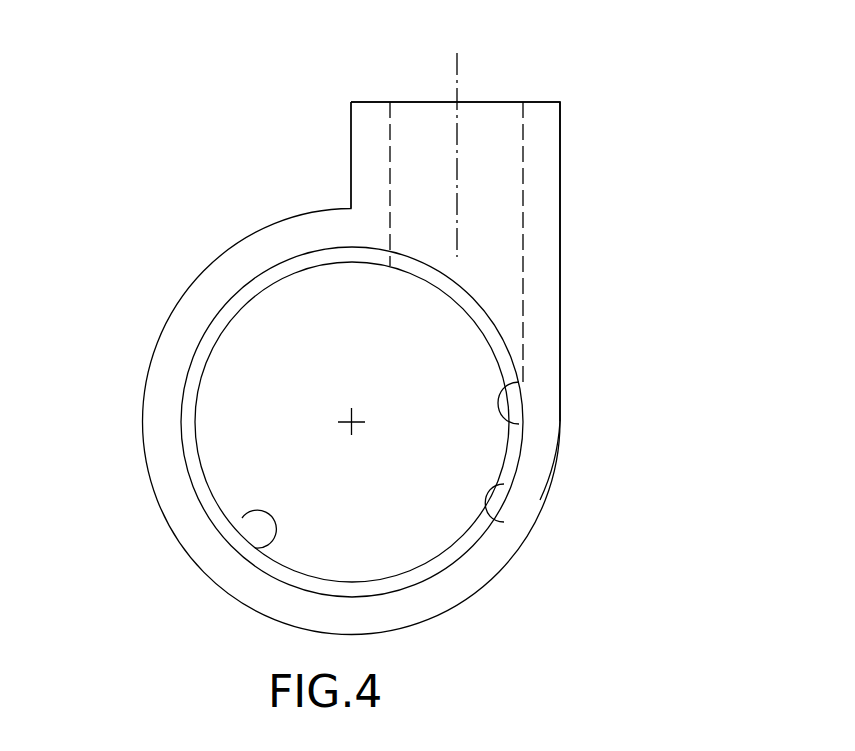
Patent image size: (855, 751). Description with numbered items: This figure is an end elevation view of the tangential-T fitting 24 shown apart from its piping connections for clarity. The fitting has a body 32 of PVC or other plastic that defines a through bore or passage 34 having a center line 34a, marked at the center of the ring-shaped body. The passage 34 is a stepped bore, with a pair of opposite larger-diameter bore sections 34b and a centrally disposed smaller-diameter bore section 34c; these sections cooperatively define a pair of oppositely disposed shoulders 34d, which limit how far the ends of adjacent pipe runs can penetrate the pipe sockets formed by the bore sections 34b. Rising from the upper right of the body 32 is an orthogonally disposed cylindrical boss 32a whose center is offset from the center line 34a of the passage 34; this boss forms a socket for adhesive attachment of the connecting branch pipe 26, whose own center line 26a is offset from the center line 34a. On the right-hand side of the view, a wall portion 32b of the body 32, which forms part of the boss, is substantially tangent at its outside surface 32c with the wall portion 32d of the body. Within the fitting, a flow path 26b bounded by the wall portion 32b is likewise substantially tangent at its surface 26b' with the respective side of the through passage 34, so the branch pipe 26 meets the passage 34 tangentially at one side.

The tangential-T fitting 24 is at (215, 606).
The connecting branch pipe 26 is at (367, 155).
The center line of branch pipe 26a is at (458, 73).
The flow path 26b is at (538, 166).
The surface of flow path 26b' is at (623, 242).
The body 32 is at (222, 272).
The cylindrical boss 32a is at (545, 207).
The wall portion 32b is at (545, 298).
The outside surface 32c is at (562, 340).
The wall portion 32d is at (557, 462).
The through bore or passage 34 is at (519, 424).
The center line of passage 34a is at (353, 423).
The larger-diameter bore sections 34b is at (504, 522).
The smaller-diameter bore section 34c is at (242, 518).
The shoulders 34d is at (442, 562).